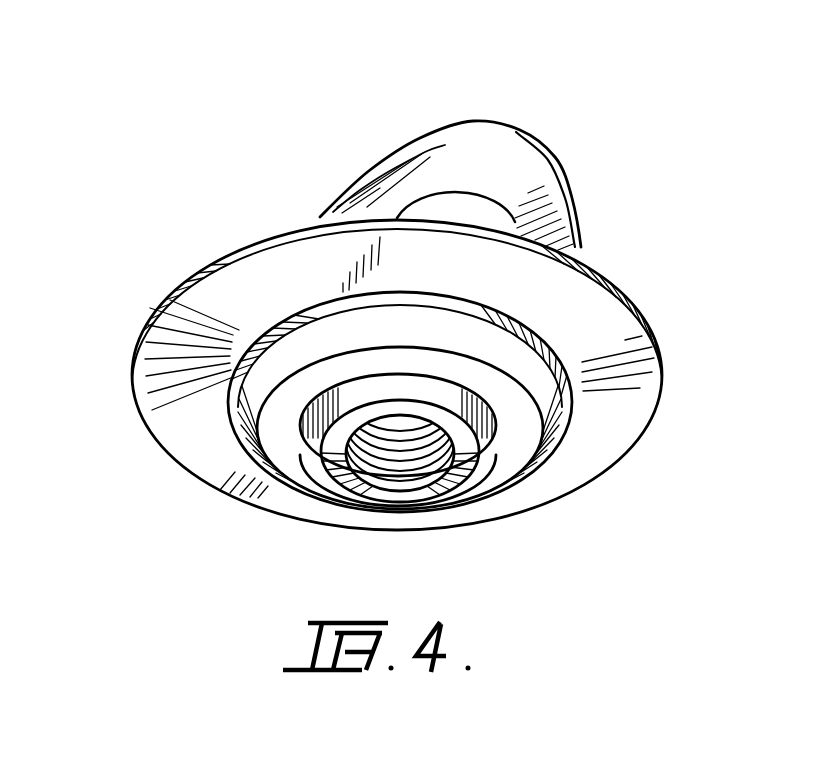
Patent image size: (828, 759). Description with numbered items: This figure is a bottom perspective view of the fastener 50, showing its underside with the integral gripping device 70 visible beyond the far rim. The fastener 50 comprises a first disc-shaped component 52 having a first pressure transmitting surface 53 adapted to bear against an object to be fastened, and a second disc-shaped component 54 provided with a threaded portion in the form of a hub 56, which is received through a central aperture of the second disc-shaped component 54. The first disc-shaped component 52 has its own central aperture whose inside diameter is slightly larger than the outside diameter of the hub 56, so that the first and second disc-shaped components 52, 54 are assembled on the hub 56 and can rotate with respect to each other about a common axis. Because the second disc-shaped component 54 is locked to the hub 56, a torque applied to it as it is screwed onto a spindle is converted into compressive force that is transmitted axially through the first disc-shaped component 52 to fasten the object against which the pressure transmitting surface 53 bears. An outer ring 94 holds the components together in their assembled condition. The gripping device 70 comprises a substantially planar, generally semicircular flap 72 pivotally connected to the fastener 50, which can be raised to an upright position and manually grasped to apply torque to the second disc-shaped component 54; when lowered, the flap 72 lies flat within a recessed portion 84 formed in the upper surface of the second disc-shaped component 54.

The fastener 50 is at (263, 222).
The first disc-shaped component 52 is at (296, 349).
The first pressure transmitting surface 53 is at (473, 370).
The second disc-shaped component 54 is at (220, 293).
The hub 56 is at (446, 492).
The gripping device 70 is at (567, 133).
The flap 72 is at (428, 150).
The recessed portion 84 is at (563, 206).
The outer ring 94 is at (307, 458).